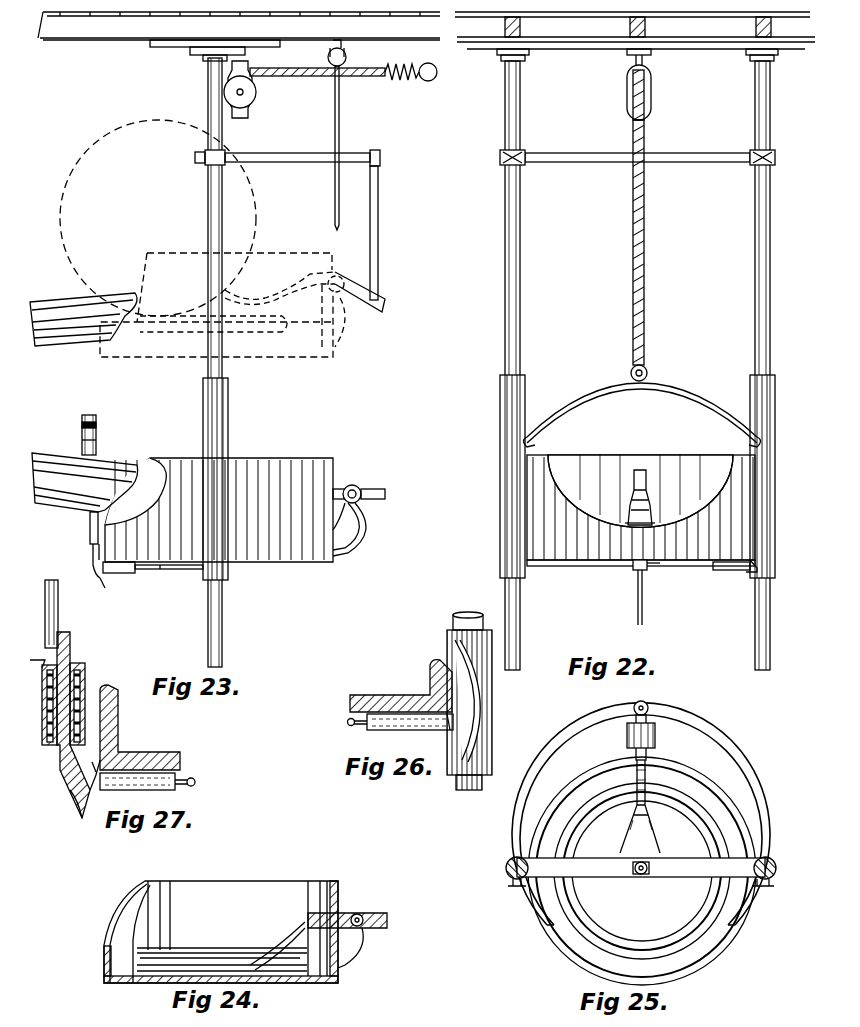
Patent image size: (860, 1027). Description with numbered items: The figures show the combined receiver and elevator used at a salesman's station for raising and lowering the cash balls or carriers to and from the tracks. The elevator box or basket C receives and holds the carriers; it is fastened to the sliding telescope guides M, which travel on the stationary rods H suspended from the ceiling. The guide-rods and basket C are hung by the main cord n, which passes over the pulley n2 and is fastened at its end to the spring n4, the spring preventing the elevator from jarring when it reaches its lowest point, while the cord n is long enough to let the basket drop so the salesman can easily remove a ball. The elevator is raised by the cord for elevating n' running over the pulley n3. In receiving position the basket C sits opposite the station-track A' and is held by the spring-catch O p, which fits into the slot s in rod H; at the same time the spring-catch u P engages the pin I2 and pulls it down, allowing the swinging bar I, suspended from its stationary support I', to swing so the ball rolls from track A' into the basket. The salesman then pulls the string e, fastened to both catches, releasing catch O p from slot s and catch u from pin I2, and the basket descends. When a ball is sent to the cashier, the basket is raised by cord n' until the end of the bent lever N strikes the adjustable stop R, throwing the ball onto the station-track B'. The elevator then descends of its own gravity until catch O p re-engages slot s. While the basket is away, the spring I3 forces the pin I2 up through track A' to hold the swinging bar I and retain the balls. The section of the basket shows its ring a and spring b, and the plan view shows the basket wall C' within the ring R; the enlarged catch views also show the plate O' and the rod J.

In FIG. 23, the rods H is at (222, 372).
In FIG. 22, the rods H is at (520, 290).
In FIG. 26, the rods H is at (485, 608).
In FIG. 25, the rods H is at (508, 876).
In FIG. 23, the sliding telescope guides M is at (228, 408).
In FIG. 22, the sliding telescope guides M is at (500, 420).
In FIG. 26, the sliding telescope guides M is at (447, 640).
In FIG. 25, the sliding telescope guides M is at (506, 860).
In FIG. 23, the adjustable stop R is at (292, 152).
In FIG. 22, the adjustable stop R is at (732, 154).
In FIG. 25, the adjustable stop R is at (766, 778).
In FIG. 23, the elevator box or basket C is at (229, 407).
In FIG. 22, the elevator box or basket C is at (641, 495).
In FIG. 26, the elevator box or basket C is at (401, 686).
In FIG. 27, the elevator box or basket C is at (140, 727).
In FIG. 24, the elevator box or basket C is at (221, 922).
In FIG. 25, the can wall C' is at (642, 871).
In FIG. 23, the bent lever N is at (292, 282).
In FIG. 22, the bent lever N is at (648, 495).
In FIG. 25, the bent lever N is at (646, 777).
In FIG. 24, the bent lever N is at (304, 928).
In FIG. 23, the ring a is at (290, 320).
In FIG. 22, the ring a is at (660, 522).
In FIG. 25, the ring a is at (696, 828).
In FIG. 24, the ring a is at (190, 956).
In FIG. 24, the spring b is at (235, 965).
In FIG. 22, the main cord n is at (647, 250).
In FIG. 23, the cord for elevating n' is at (317, 148).
In FIG. 23, the pulley n2 is at (251, 89).
In FIG. 22, the pulley n2 is at (651, 88).
In FIG. 23, the pulley n3 is at (346, 50).
In FIG. 23, the spring n4 is at (400, 82).
In FIG. 23, the spring for stopping the ball P is at (125, 580).
In FIG. 22, the spring for stopping the ball P is at (633, 572).
In FIG. 27, the spring for stopping the ball P is at (176, 793).
In FIG. 22, the spring-catch p is at (748, 574).
In FIG. 26, the spring-catch p is at (350, 728).
In FIG. 23, the string e is at (162, 575).
In FIG. 22, the string e is at (648, 570).
In FIG. 22, the spring for holding the elevator O is at (731, 577).
In FIG. 26, the plate O' is at (410, 734).
In FIG. 26, the slot s is at (447, 735).
In FIG. 23, the spring-catch u is at (107, 589).
In FIG. 27, the spring-catch u is at (90, 763).
In FIG. 23, the swinging bar I is at (95, 433).
In FIG. 23, the stationary support I' is at (97, 446).
In FIG. 23, the pin I2 is at (92, 565).
In FIG. 27, the pin I2 is at (66, 790).
In FIG. 23, the spring I3 is at (84, 535).
In FIG. 27, the spring I3 is at (85, 672).
In FIG. 27, the rod J is at (58, 608).
In FIG. 23, the station-track A' is at (85, 491).
In FIG. 23, the station-track B' is at (83, 331).